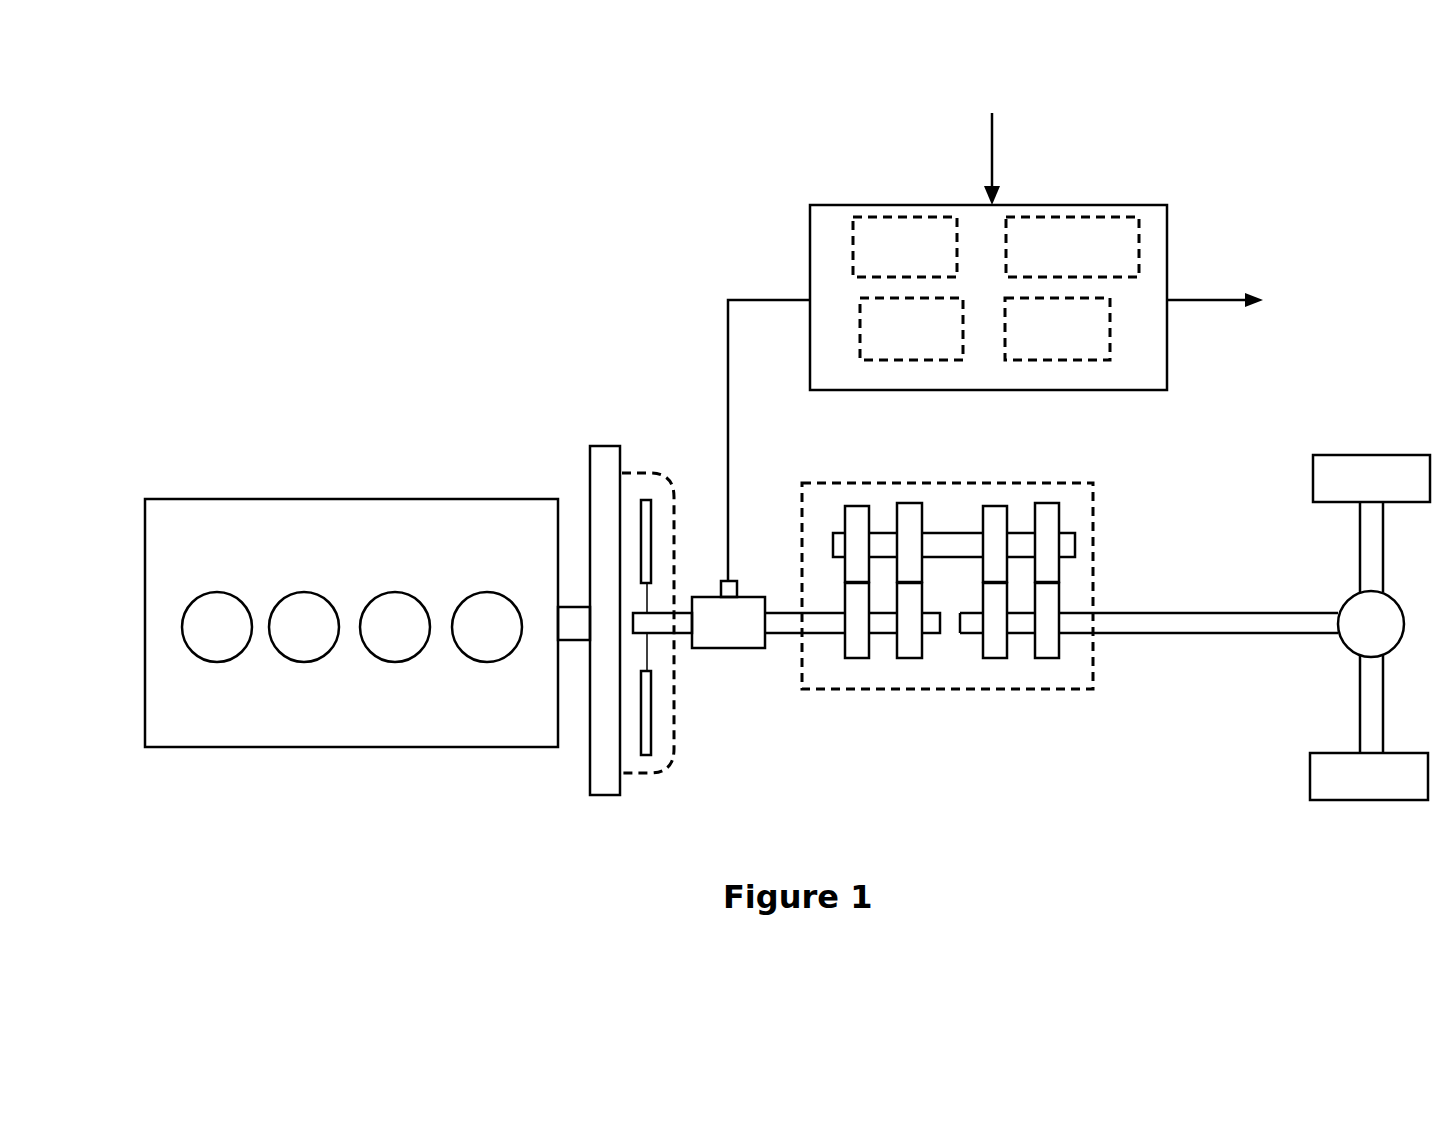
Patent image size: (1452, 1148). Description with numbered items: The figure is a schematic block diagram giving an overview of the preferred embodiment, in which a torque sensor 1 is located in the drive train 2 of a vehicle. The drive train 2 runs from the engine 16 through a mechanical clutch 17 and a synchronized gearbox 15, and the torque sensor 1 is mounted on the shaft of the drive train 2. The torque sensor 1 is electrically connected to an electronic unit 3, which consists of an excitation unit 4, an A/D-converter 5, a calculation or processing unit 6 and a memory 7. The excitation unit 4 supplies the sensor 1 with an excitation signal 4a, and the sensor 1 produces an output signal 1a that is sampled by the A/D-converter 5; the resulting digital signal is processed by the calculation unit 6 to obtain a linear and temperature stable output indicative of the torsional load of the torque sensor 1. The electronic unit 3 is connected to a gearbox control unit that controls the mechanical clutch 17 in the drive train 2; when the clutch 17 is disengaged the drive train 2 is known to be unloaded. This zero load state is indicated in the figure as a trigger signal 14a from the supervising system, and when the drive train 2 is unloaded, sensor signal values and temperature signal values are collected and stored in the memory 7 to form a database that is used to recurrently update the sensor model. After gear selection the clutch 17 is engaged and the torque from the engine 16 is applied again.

The torque sensor 1 is at (723, 627).
The output signal 1a is at (709, 413).
The drive train 2 is at (781, 645).
The electronic unit 3 is at (810, 228).
The excitation unit 4 is at (867, 215).
The excitation signal 4a is at (728, 340).
The A/D-converter 5 is at (898, 358).
The calculation unit 6 is at (1122, 218).
The memory 7 is at (1092, 358).
The trigger signal 14a is at (992, 158).
The synchronized gearbox 15 is at (1068, 700).
The engine 16 is at (320, 492).
The mechanical clutch 17 is at (647, 468).